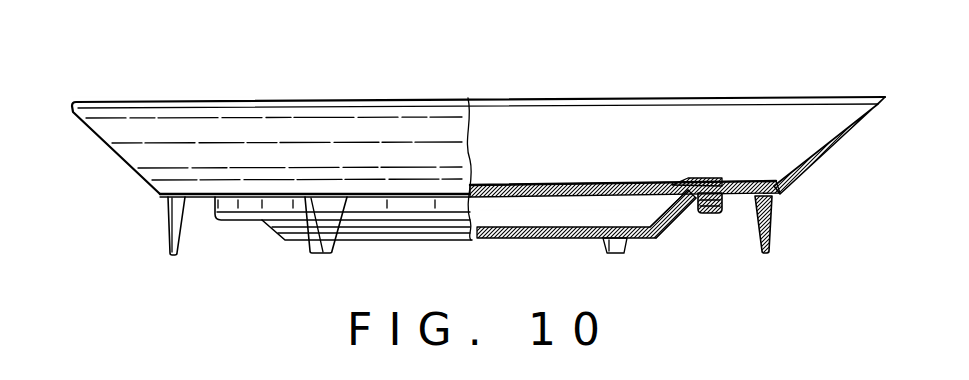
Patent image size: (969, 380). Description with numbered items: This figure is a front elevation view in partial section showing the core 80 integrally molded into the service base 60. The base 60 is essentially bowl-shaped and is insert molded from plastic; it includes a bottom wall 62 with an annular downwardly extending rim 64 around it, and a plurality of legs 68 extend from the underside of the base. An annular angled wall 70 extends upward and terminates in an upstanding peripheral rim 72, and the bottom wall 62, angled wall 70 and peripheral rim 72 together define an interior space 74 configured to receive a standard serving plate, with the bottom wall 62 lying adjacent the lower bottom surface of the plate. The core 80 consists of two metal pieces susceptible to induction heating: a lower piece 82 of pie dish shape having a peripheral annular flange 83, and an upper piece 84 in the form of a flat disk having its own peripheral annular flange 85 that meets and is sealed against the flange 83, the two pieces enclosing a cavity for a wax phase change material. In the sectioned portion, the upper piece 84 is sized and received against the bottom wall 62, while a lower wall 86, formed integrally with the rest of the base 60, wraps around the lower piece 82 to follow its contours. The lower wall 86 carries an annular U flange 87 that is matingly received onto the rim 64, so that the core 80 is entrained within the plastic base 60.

The service base 60 is at (705, 21).
The bottom wall 62 is at (566, 185).
The annular downwardly extending rim 64 is at (720, 213).
The legs 68 is at (325, 255).
The annular angled wall 70 is at (838, 152).
The upstanding peripheral rim 72 is at (485, 100).
The interior space 74 is at (760, 157).
The core 80 is at (595, 221).
The lower piece 82 is at (533, 240).
The peripheral annular flange 83 is at (672, 218).
The upper piece 84 is at (622, 183).
The peripheral annular flange 85 is at (692, 180).
The lower wall 86 is at (453, 223).
The annular U flange 87 is at (705, 211).